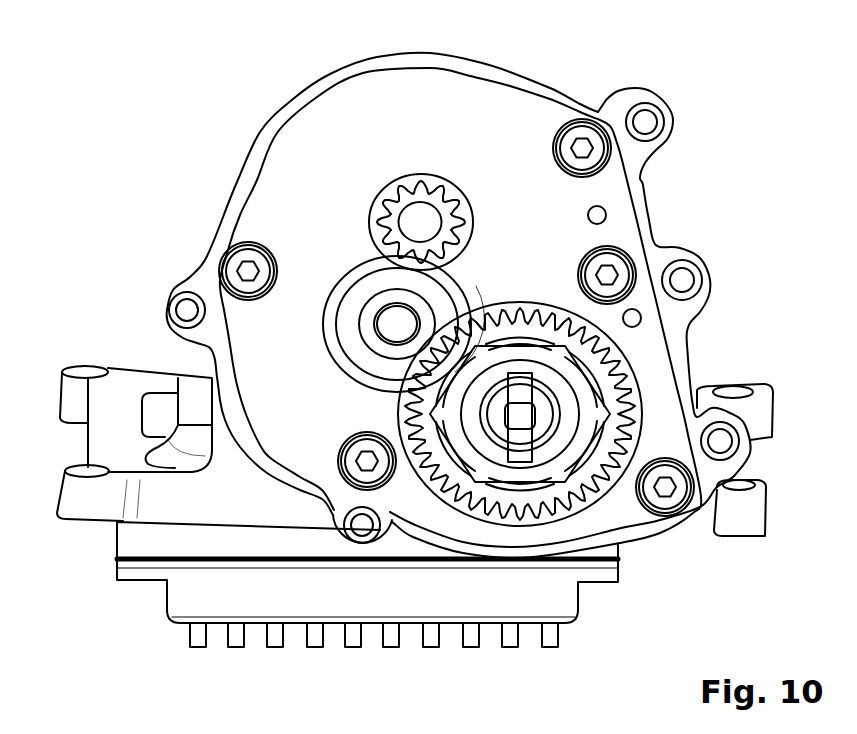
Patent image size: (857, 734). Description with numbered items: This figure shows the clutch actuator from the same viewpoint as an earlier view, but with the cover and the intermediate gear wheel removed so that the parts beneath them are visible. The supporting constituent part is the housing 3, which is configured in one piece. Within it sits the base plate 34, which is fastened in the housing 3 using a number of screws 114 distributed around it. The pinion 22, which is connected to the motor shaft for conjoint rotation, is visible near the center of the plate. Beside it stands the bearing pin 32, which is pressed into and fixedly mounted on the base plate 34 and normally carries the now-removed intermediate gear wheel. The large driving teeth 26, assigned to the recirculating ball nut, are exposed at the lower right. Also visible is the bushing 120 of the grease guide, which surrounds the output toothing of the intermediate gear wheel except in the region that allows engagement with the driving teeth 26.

The housing 3 is at (652, 204).
The base plate 34 is at (335, 120).
The pinion 22 is at (420, 195).
The bearing pin 32 is at (396, 321).
The bushing 120 is at (468, 290).
The driving teeth 26 is at (643, 377).
The screws 114 is at (583, 150).